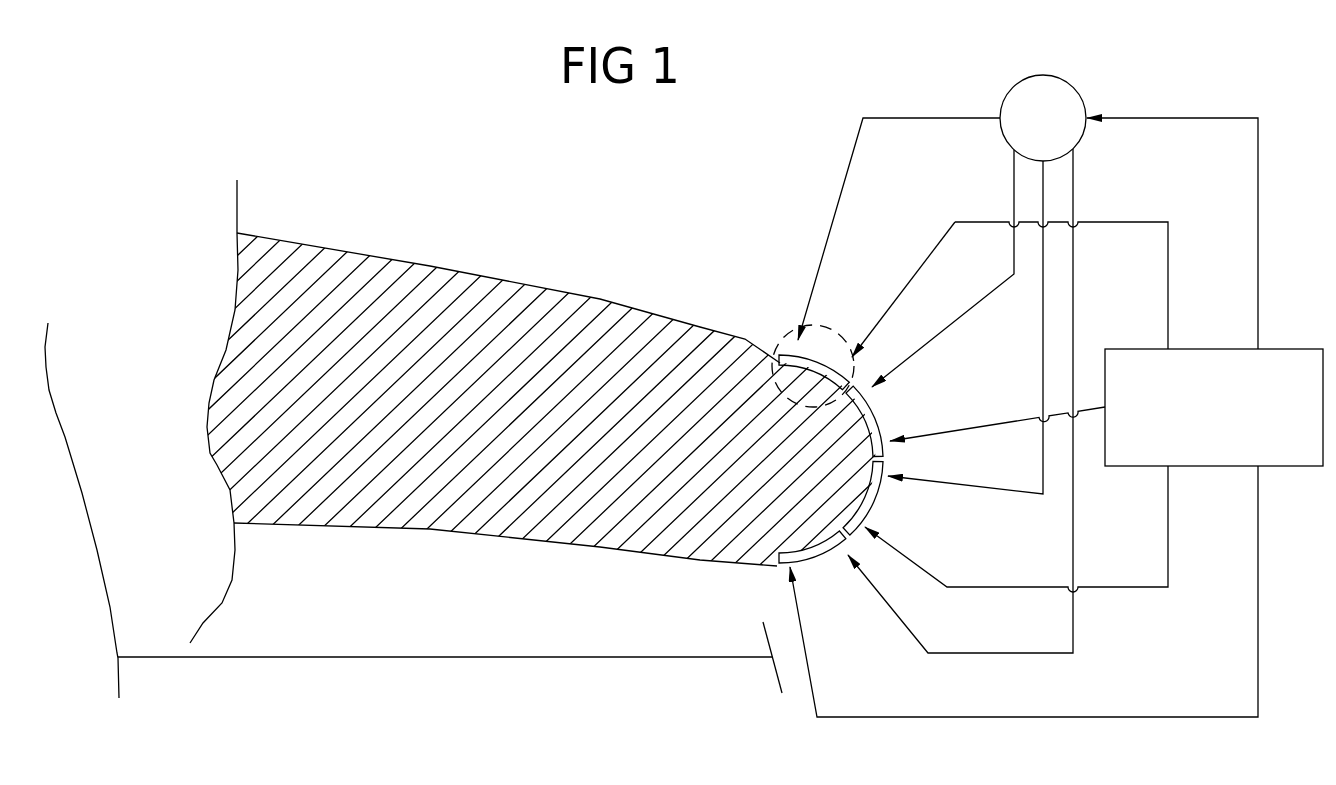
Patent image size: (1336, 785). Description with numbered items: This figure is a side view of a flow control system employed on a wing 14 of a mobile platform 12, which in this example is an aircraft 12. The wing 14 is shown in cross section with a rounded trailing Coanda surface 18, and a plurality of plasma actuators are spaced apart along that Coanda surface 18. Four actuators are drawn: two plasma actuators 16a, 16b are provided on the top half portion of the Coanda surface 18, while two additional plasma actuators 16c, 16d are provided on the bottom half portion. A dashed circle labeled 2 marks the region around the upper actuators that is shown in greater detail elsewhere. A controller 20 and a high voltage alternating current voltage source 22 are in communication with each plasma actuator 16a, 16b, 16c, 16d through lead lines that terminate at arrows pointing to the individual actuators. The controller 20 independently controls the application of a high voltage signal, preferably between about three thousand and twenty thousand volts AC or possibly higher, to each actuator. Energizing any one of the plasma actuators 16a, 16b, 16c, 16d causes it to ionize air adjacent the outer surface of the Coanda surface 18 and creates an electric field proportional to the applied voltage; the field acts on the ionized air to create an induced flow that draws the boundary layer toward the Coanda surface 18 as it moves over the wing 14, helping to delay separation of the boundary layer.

The mobile platform 12 is at (522, 657).
The wing 14 is at (481, 415).
The detail region of FIG. 2 is at (783, 342).
The plasma actuator 16a is at (816, 364).
The plasma actuator 16b is at (868, 418).
The plasma actuator 16c is at (864, 493).
The plasma actuator 16d is at (810, 553).
The Coanda surface 18 is at (888, 522).
The controller 20 is at (1201, 434).
The high voltage alternating current (AC) voltage source 22 is at (1070, 83).